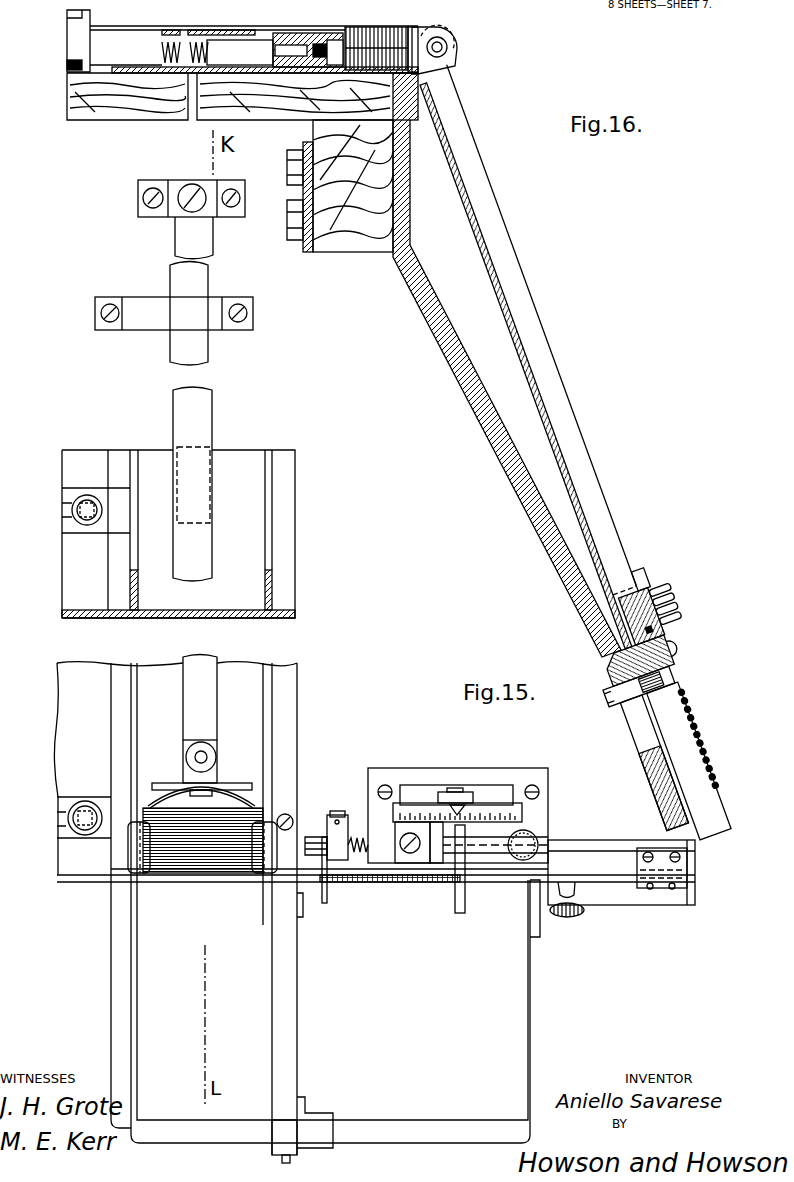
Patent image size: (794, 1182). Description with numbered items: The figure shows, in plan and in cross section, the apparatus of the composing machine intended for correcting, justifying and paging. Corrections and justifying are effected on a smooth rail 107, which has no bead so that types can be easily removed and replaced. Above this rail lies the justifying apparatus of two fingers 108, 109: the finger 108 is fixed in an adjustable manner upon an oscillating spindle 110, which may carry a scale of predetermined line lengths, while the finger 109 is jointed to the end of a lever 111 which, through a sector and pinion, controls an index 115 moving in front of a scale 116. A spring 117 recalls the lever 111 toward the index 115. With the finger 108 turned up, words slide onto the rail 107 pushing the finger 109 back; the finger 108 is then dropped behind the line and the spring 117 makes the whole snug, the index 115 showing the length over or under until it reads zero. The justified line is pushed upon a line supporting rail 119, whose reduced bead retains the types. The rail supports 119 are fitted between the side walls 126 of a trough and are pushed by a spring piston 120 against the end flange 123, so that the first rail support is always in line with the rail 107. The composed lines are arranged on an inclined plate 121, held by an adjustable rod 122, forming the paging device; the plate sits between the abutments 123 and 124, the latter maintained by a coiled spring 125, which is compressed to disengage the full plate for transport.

In FIG. 15, the justifying smooth rail 107 is at (612, 888).
In FIG. 15, the finger 108 is at (465, 905).
In FIG. 15, the finger 109 is at (326, 900).
In FIG. 15, the oscillating spindle 110 is at (581, 840).
In FIG. 15, the lever 111 is at (335, 812).
In FIG. 15, the index 115 is at (458, 790).
In FIG. 15, the scale 116 is at (428, 803).
In FIG. 15, the spring 117 is at (372, 855).
In FIG. 16, the line supporting rail 119 is at (373, 36).
In FIG. 15, the line supporting rail 119 is at (205, 875).
In FIG. 16, the spring piston 120 is at (226, 48).
In FIG. 15, the spring piston 120 is at (212, 716).
In FIG. 16, the inclined plate 121 is at (519, 348).
In FIG. 15, the inclined plate 121 is at (528, 1004).
In FIG. 16, the rod 122 is at (538, 350).
In FIG. 15, the rod 122 is at (293, 1035).
In FIG. 16, the end flange 123 is at (455, 63).
In FIG. 15, the end flange 123 is at (140, 873).
In FIG. 16, the abutment 124 is at (612, 662).
In FIG. 16, the coiled spring 125 is at (636, 703).
In FIG. 16, the side walls 126 is at (293, 32).
In FIG. 15, the side walls 126 is at (133, 748).